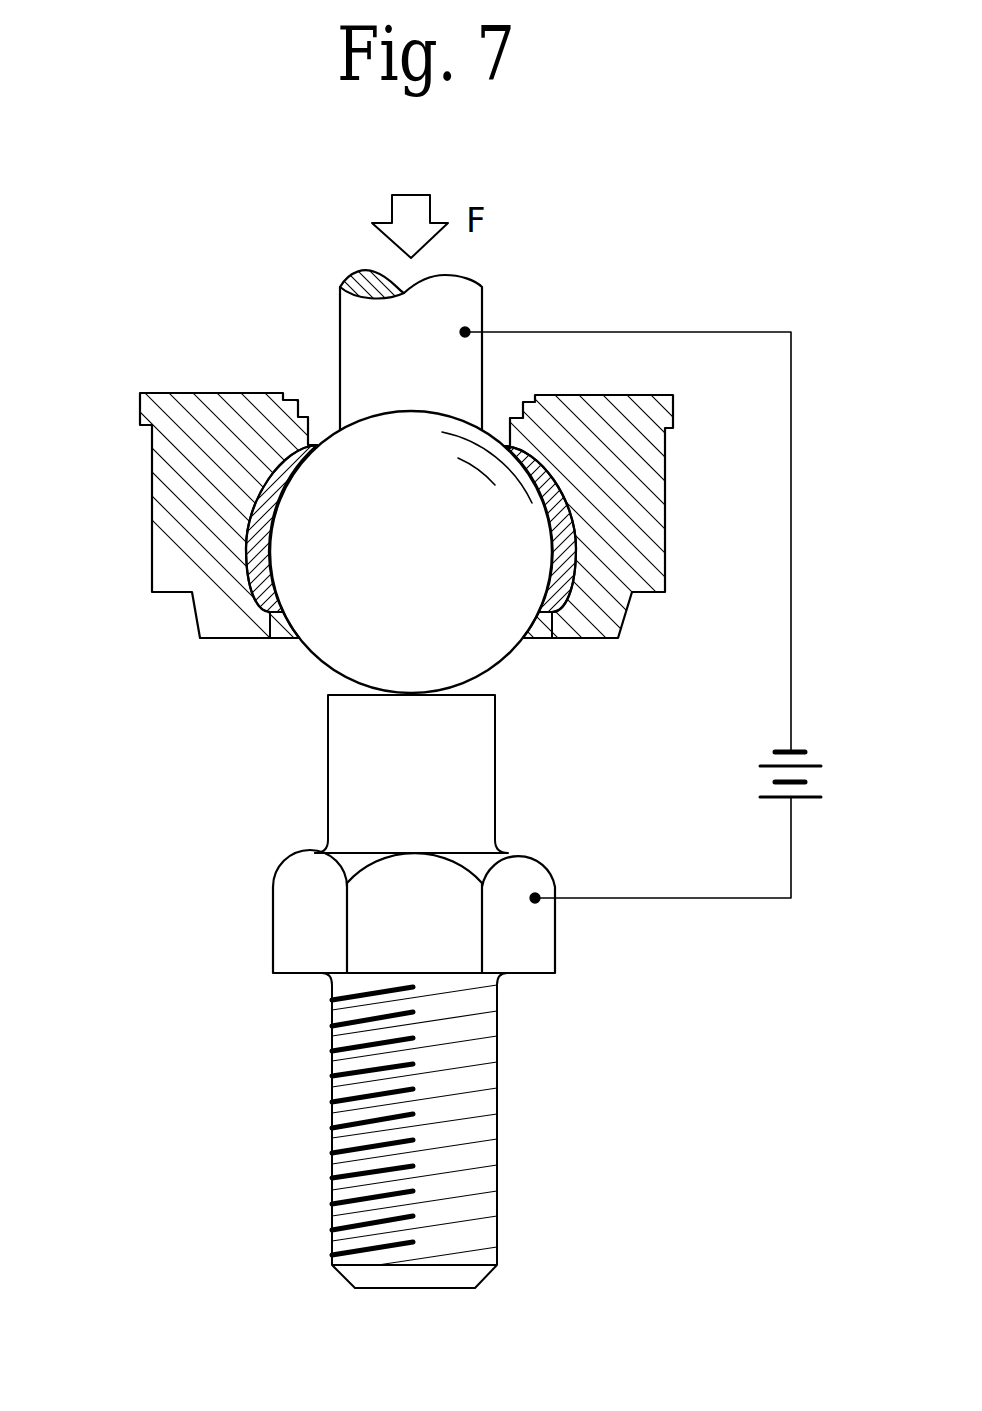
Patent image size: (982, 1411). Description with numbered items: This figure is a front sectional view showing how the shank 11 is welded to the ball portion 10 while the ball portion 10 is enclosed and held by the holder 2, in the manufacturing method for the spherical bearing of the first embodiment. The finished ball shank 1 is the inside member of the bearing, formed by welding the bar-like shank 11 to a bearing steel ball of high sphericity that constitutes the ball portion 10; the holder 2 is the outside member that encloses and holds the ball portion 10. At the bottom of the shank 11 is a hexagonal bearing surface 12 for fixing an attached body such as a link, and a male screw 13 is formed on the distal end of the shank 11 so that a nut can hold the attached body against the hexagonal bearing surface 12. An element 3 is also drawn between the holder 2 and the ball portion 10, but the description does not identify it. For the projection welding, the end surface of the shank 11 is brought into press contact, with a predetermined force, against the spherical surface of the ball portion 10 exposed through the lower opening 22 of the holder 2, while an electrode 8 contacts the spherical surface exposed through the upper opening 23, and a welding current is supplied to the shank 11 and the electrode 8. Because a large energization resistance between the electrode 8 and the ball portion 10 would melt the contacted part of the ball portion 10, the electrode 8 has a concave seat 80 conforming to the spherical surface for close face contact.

The ball shank 1 is at (357, 991).
The holder 2 is at (376, 520).
The resin ball seat 3 is at (247, 538).
The electrode 8 is at (355, 337).
The ball portion 10 is at (300, 488).
The shank 11 is at (350, 790).
The hexagonal bearing surface 12 is at (288, 940).
The male screw 13 is at (345, 1067).
The opening 22 is at (280, 640).
The opening 23 is at (322, 430).
The concave seat 80 is at (408, 413).